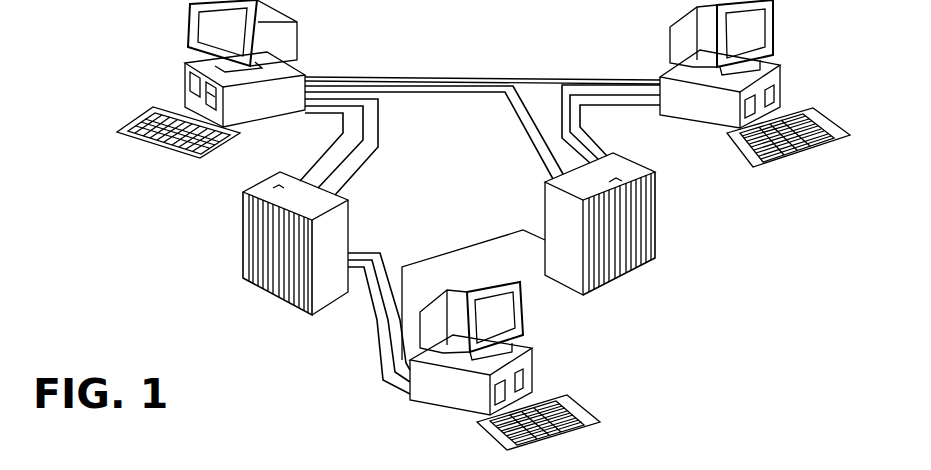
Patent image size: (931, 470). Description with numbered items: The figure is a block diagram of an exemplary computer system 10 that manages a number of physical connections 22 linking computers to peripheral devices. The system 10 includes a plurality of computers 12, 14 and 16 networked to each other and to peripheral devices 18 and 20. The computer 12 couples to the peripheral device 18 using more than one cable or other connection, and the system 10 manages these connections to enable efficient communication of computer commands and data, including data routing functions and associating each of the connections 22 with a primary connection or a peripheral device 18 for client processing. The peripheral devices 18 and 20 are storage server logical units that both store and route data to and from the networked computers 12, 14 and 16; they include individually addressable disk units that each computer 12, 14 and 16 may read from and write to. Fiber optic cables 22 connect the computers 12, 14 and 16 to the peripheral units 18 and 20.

The computer system 10 is at (127, 272).
The computer 12 is at (298, 32).
The computer 14 is at (773, 13).
The computer 16 is at (530, 363).
The peripheral device 18 is at (347, 230).
The peripheral device 20 is at (680, 213).
The physical connections 22 is at (413, 80).